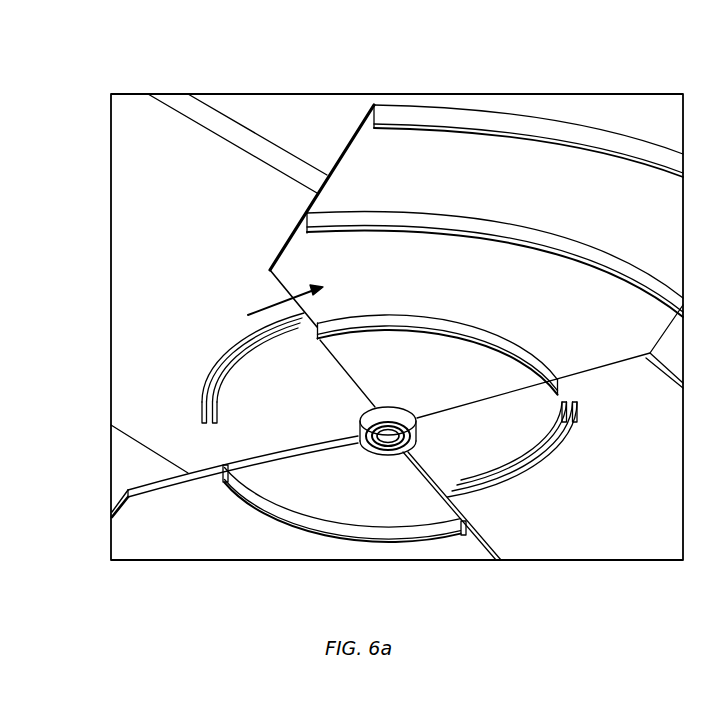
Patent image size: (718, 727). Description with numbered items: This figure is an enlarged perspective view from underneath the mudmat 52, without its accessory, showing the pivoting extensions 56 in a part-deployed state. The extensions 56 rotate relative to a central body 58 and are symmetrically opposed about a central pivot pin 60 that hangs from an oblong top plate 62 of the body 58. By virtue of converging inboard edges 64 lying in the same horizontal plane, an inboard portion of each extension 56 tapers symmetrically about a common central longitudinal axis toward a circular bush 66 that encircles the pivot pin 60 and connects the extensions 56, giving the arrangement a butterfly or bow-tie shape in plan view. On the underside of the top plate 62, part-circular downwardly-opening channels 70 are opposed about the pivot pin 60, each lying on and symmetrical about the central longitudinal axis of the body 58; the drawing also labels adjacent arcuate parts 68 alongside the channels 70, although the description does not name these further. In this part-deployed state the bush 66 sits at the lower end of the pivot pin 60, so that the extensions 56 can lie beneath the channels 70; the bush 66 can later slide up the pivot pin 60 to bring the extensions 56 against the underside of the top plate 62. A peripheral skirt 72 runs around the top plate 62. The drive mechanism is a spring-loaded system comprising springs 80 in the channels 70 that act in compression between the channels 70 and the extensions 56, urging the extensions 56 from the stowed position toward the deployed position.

The mudmat 52 is at (156, 86).
The extensions 56 is at (530, 163).
The central body 58 is at (127, 328).
The central pivot pin 60 is at (388, 442).
The oblong top plate 62 is at (122, 226).
The converging inboard edges 64 is at (613, 365).
The circular bush 66 is at (396, 410).
The arcuate track segment 68 is at (452, 331).
The part-circular downwardly-opening channels 70 is at (228, 352).
The peripheral skirt 72 is at (253, 143).
The springs 80 is at (278, 337).